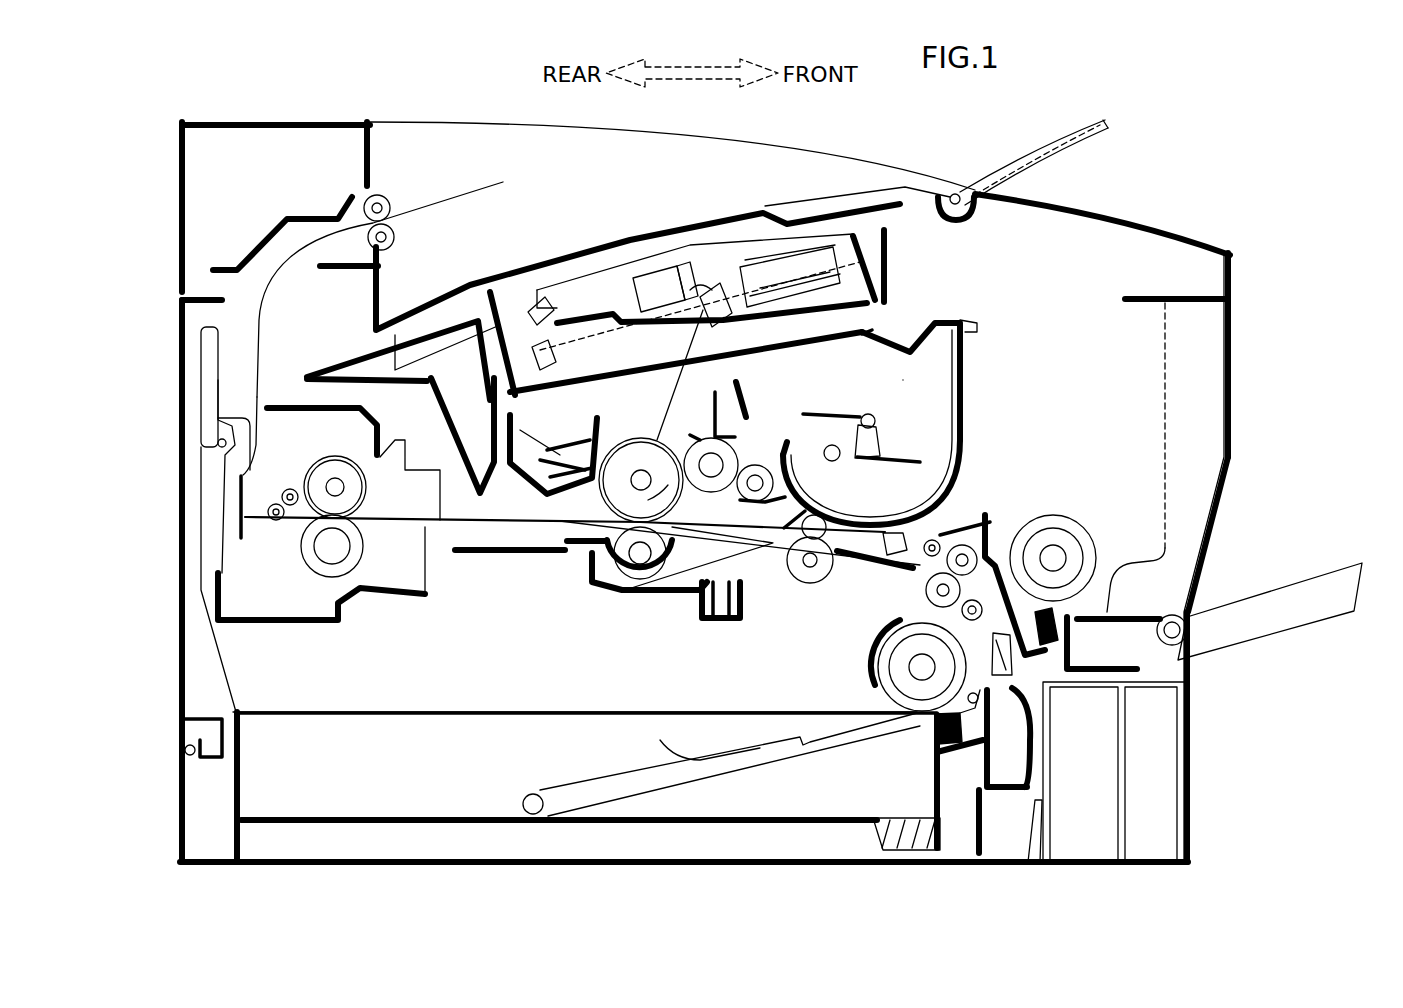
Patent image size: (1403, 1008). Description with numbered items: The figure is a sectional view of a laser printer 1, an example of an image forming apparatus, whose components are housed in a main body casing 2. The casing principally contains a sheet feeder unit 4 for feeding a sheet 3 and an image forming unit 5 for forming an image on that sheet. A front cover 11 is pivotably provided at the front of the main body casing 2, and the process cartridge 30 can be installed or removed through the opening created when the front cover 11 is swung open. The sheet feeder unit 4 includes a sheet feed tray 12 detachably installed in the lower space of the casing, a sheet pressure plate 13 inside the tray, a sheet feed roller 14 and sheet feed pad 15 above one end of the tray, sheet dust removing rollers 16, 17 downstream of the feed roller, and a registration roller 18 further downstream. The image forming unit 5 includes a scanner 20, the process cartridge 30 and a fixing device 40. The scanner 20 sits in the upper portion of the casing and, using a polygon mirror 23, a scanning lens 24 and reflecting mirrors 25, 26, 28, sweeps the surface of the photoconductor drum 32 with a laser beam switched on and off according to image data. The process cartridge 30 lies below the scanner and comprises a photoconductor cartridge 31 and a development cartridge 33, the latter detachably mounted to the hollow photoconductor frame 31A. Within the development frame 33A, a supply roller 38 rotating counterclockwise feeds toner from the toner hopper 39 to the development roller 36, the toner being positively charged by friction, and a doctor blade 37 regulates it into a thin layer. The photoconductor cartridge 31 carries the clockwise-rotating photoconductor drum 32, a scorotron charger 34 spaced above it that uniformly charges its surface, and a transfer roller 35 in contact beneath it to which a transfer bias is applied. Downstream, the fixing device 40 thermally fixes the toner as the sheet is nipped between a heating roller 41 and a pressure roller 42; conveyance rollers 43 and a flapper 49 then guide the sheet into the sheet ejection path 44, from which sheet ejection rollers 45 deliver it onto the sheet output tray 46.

The laser printer 1 is at (1197, 145).
The main body casing 2 is at (1125, 218).
The sheet 3 is at (493, 186).
The sheet feeder unit 4 is at (503, 702).
The image forming unit 5 is at (524, 558).
The front cover 11 is at (1233, 368).
The sheet feed tray 12 is at (330, 710).
The sheet pressure plate 13 is at (695, 745).
The sheet feed roller 14 is at (878, 640).
The sheet feed pad 15 is at (932, 735).
The sheet dust removing roller 16 is at (997, 722).
The sheet dust removing roller 17 is at (1012, 532).
The registration roller 18 is at (790, 575).
The scanner 20 is at (620, 266).
The polygon mirror 23 is at (746, 240).
The scanning lens 24 is at (641, 270).
The reflecting mirror 25 is at (525, 290).
The reflecting mirror 26 is at (552, 441).
The reflecting mirror 28 is at (700, 268).
The process cartridge 30 is at (925, 303).
The photoconductor cartridge 31 is at (500, 480).
The photoconductor frame 31A is at (976, 446).
The photoconductor drum 32 is at (578, 498).
The development cartridge 33 is at (970, 320).
The development frame 33A is at (868, 332).
The scorotron charger 34 is at (641, 480).
The transfer roller 35 is at (648, 573).
The development roller 36 is at (710, 445).
The doctor blade 37 is at (742, 428).
The supply roller 38 is at (766, 463).
The toner hopper 39 is at (915, 391).
The fixing device 40 is at (428, 596).
The heating roller 41 is at (312, 467).
The pressure roller 42 is at (362, 558).
The conveyance rollers 43 is at (284, 520).
The sheet ejection path 44 is at (248, 325).
The sheet ejection rollers 45 is at (392, 205).
The sheet output tray 46 is at (536, 253).
The flapper 49 is at (238, 507).